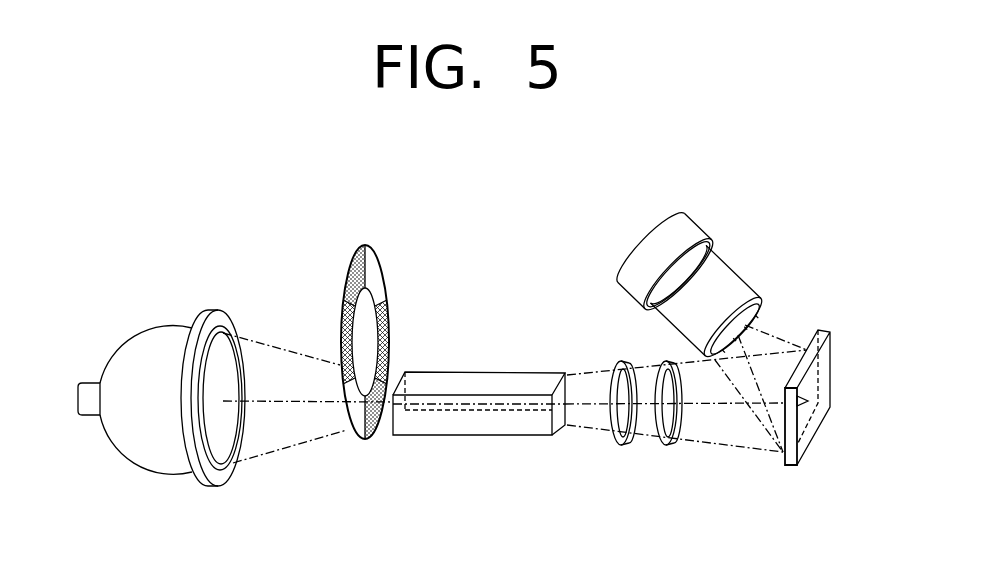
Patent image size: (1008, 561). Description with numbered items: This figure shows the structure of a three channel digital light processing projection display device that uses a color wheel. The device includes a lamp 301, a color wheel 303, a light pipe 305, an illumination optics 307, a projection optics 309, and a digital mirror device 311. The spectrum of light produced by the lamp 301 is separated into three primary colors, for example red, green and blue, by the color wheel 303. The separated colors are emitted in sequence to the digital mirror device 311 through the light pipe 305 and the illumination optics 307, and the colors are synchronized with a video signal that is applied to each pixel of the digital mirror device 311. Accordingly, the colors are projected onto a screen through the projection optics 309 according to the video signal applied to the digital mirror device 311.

The lamp 301 is at (148, 330).
The color wheel 303 is at (383, 268).
The light pipe 305 is at (470, 436).
The illumination optics 307 is at (678, 453).
The projection optics 309 is at (672, 222).
The digital mirror device (DMD) 311 is at (815, 432).